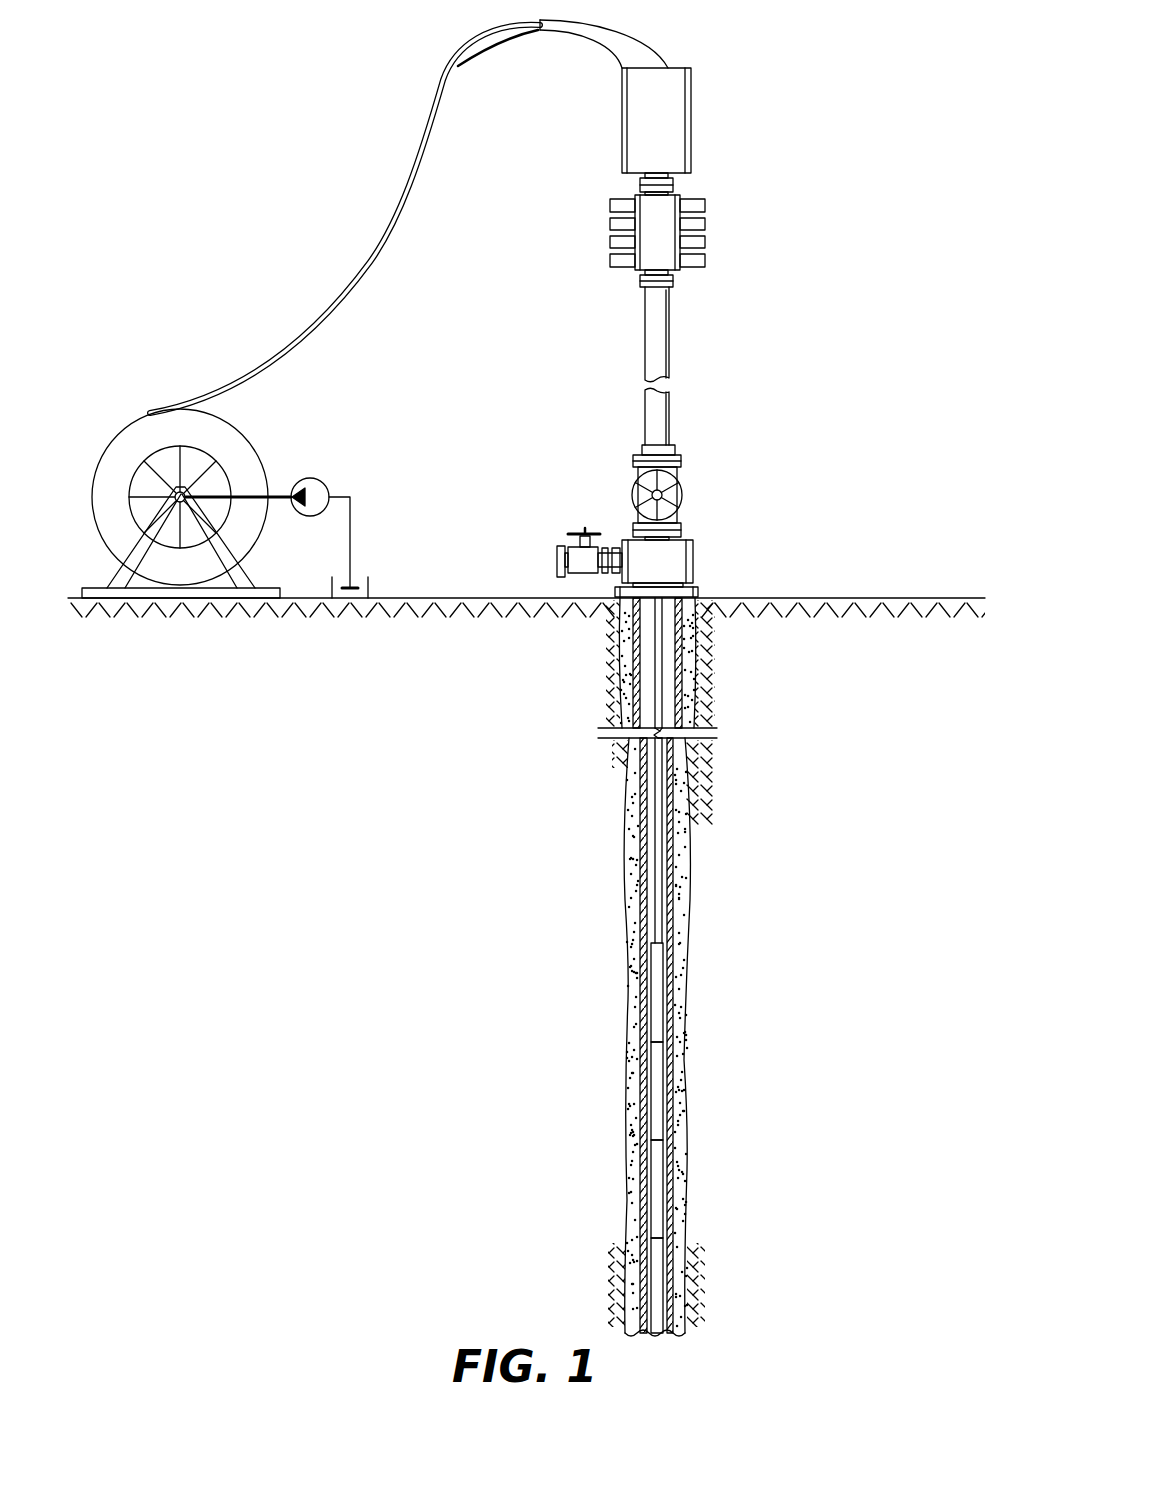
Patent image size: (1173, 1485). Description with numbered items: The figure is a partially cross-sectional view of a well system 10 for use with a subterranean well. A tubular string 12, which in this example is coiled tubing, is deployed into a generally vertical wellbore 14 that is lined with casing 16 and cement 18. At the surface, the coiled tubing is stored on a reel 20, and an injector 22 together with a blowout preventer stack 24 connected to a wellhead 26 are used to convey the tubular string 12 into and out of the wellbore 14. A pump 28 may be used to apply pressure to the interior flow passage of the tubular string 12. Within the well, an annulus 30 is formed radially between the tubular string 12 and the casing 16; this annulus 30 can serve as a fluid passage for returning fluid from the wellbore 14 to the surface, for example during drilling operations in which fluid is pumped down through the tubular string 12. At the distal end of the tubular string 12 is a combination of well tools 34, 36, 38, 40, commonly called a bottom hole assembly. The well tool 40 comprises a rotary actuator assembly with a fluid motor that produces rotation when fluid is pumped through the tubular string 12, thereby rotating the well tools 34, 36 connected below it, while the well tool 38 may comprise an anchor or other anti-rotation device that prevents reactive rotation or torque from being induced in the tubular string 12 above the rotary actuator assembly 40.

The system 10 is at (526, 678).
The tubular string 12 is at (343, 297).
The wellbore 14 is at (627, 668).
The casing 16 is at (633, 649).
The cement 18 is at (697, 690).
The reel 20 is at (245, 435).
The injector 22 is at (622, 113).
The blowout preventer stack 24 is at (610, 238).
The wellhead 26 is at (702, 592).
The pump 28 is at (327, 483).
The annulus 30 is at (667, 646).
The well tool 34 is at (662, 1265).
The well tool 36 is at (662, 1163).
The well tool 38 is at (652, 1018).
The rotary actuator assembly 40 is at (652, 1079).